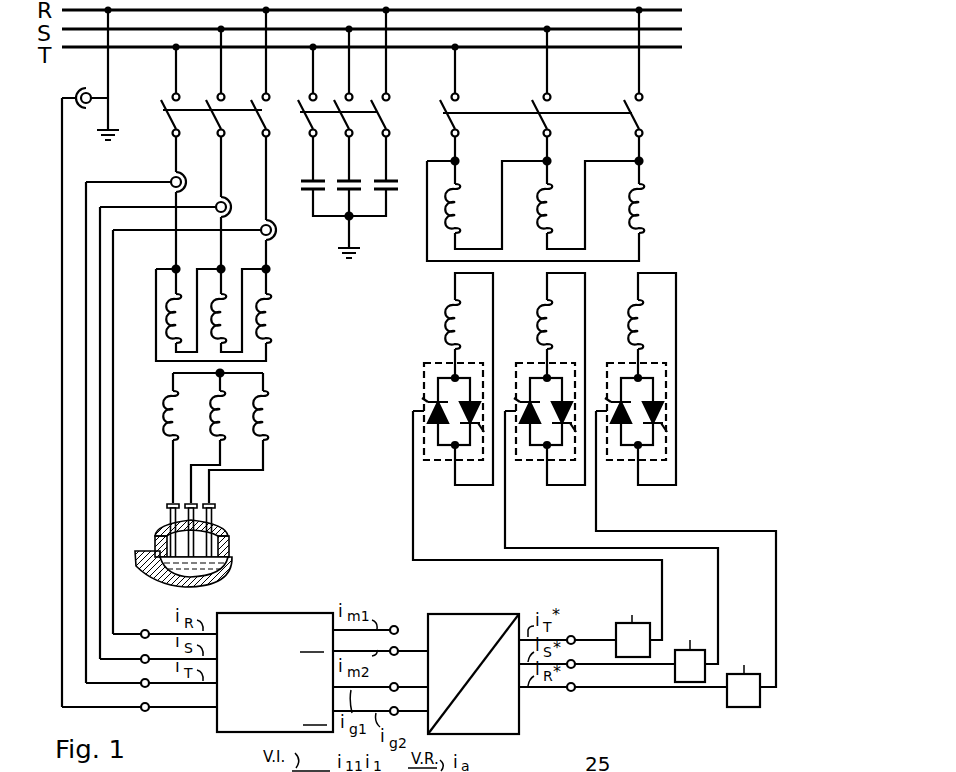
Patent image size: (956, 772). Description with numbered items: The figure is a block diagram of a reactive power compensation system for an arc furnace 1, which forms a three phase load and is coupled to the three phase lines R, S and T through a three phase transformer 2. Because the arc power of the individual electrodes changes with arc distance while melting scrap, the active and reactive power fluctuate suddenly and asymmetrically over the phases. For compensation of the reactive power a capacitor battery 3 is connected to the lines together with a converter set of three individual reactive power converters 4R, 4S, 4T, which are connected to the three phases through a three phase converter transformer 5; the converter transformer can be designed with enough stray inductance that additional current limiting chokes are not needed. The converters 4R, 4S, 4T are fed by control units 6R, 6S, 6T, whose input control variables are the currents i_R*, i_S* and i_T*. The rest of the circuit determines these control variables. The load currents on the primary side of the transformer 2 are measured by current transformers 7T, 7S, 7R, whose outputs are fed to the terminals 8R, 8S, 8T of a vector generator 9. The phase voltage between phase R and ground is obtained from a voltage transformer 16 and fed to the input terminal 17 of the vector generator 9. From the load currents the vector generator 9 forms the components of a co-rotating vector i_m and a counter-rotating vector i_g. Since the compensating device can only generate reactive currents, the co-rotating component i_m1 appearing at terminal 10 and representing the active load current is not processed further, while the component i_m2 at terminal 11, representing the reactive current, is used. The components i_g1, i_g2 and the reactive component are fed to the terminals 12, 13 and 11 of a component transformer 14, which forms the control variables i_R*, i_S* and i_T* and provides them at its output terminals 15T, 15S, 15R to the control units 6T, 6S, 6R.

The arc furnace 1 is at (231, 567).
The three phase transformer 2 is at (296, 377).
The capacitor battery 3 is at (406, 169).
The reactive power converter 4T is at (474, 363).
The reactive power converter 4S is at (566, 363).
The reactive power converter 4R is at (657, 363).
The three phase converter transformer 5 is at (673, 259).
The control unit 6T is at (633, 629).
The control unit 6S is at (690, 654).
The control unit 6R is at (743, 679).
The current transformer 7T is at (197, 172).
The current transformer 7S is at (243, 196).
The current transformer 7R is at (274, 227).
The terminal 8R is at (142, 631).
The terminal 8S is at (142, 656).
The terminal 8T is at (142, 680).
The vector generator 9 is at (275, 672).
The terminal 10 is at (397, 627).
The terminal 11 is at (397, 648).
The terminal 12 is at (397, 684).
The terminal 13 is at (403, 700).
The component transformer 14 is at (474, 614).
The terminal 15T is at (574, 637).
The terminal 15S is at (574, 661).
The terminal 15R is at (574, 684).
The voltage transformer 16 is at (83, 89).
The input terminal 17 is at (145, 712).